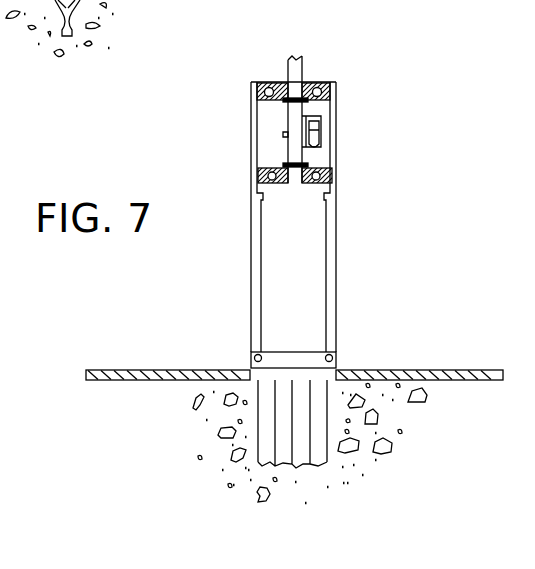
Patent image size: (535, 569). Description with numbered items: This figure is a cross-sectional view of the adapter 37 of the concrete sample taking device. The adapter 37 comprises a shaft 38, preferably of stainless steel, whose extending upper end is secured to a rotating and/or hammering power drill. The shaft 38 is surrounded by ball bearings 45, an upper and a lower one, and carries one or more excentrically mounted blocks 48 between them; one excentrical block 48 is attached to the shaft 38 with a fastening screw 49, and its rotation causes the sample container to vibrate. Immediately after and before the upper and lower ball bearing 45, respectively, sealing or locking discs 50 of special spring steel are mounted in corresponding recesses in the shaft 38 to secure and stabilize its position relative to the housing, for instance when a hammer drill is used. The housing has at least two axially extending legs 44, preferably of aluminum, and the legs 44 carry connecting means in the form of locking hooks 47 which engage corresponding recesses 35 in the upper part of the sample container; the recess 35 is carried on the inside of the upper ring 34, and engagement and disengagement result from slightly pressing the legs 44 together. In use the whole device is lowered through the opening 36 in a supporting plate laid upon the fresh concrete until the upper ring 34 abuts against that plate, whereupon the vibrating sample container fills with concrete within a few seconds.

The upper ring 34 is at (300, 360).
The recess 35 is at (333, 363).
The opening 36 is at (257, 383).
The adapter 37 is at (378, 186).
The shaft 38 is at (296, 60).
The legs 44 is at (338, 245).
The ball bearings 45 is at (327, 84).
The locking hooks 47 is at (265, 352).
The excentrically mounted block 48 is at (313, 119).
The fastening screw 49 is at (320, 146).
The sealing or locking discs 50 is at (285, 102).